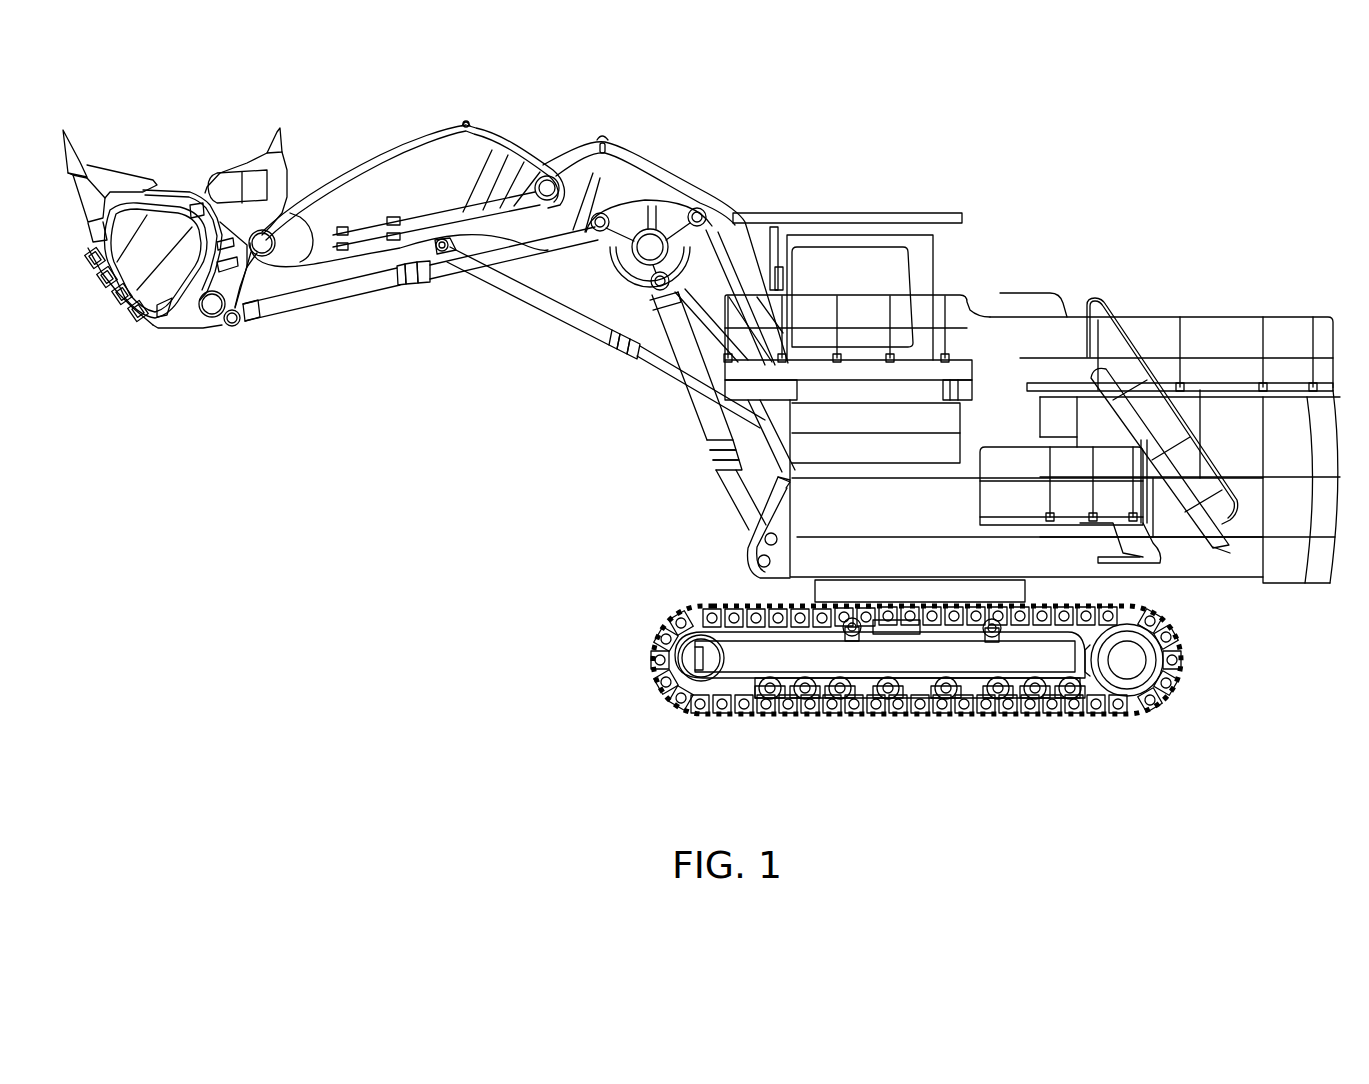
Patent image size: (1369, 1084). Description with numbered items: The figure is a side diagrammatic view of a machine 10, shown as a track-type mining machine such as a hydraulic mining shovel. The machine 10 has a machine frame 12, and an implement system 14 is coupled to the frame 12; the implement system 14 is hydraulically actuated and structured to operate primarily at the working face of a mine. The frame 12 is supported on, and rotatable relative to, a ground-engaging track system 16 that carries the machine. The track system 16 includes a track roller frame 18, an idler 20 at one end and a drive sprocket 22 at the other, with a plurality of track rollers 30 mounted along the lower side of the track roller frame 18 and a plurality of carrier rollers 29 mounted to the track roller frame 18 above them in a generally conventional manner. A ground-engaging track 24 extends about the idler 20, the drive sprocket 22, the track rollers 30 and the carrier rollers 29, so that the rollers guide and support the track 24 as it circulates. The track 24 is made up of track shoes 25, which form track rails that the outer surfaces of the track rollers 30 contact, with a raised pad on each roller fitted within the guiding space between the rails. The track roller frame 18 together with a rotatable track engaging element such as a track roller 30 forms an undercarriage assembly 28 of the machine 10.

The machine 10 is at (358, 496).
The machine frame 12 is at (749, 546).
The implement system 14 is at (203, 352).
The ground-engaging track system 16 is at (889, 674).
The track roller frame 18 is at (752, 676).
The idler 20 is at (667, 638).
The drive sprocket 22 is at (1178, 677).
The ground-engaging track 24 is at (1128, 713).
The track shoes 25 is at (1030, 710).
The undercarriage assembly 28 is at (870, 692).
The carrier rollers 29 is at (1030, 613).
The track roller 30 is at (897, 708).